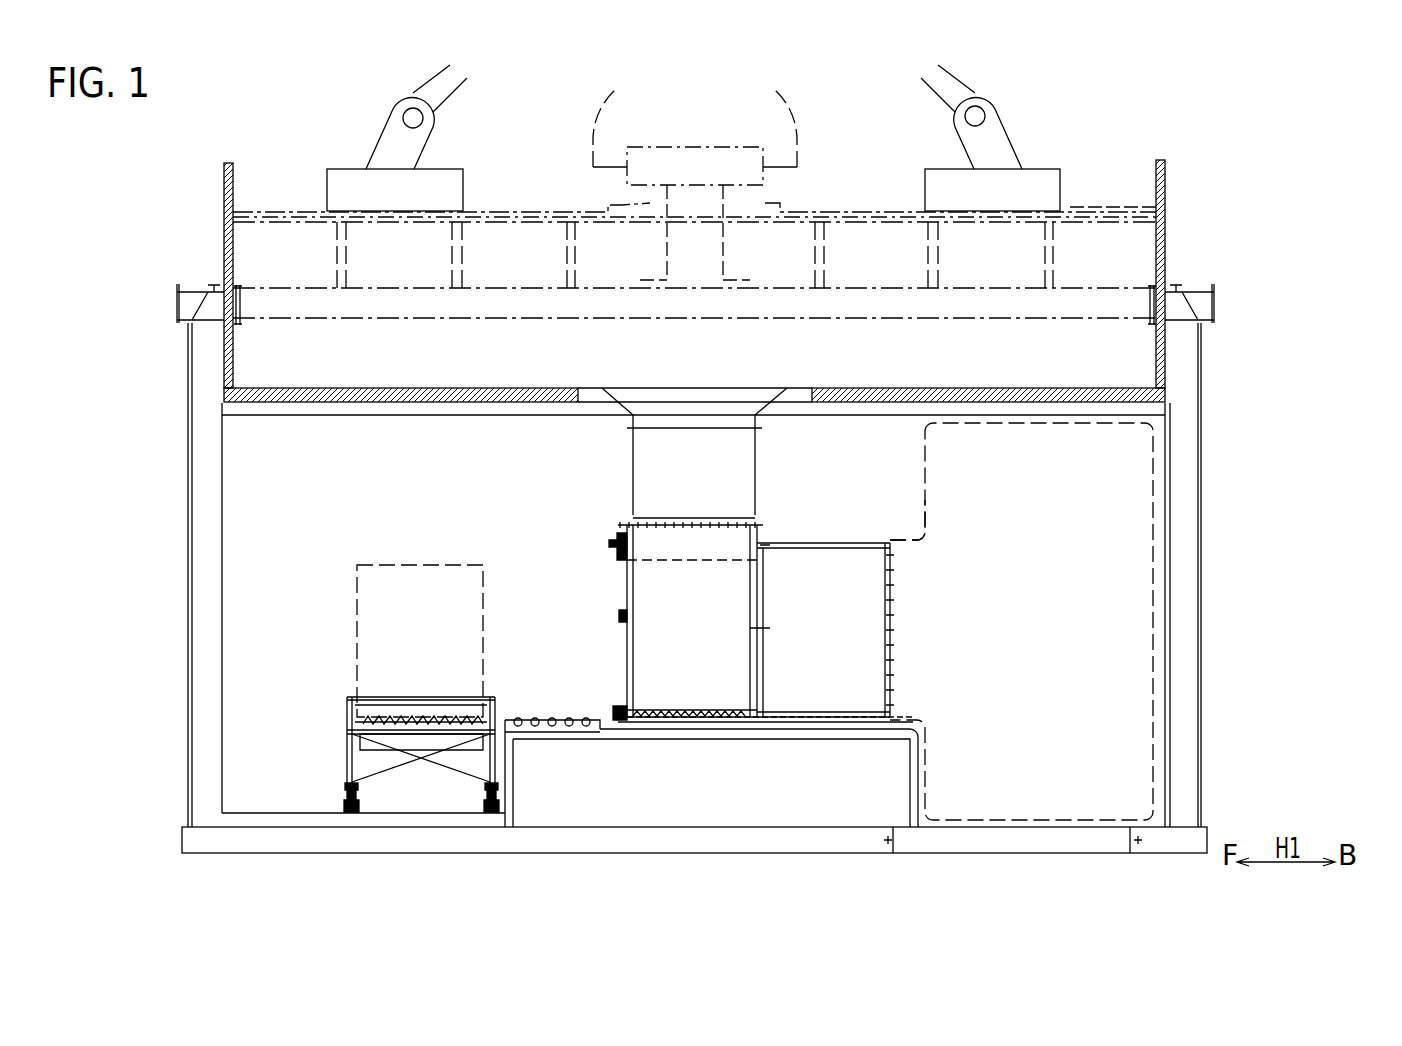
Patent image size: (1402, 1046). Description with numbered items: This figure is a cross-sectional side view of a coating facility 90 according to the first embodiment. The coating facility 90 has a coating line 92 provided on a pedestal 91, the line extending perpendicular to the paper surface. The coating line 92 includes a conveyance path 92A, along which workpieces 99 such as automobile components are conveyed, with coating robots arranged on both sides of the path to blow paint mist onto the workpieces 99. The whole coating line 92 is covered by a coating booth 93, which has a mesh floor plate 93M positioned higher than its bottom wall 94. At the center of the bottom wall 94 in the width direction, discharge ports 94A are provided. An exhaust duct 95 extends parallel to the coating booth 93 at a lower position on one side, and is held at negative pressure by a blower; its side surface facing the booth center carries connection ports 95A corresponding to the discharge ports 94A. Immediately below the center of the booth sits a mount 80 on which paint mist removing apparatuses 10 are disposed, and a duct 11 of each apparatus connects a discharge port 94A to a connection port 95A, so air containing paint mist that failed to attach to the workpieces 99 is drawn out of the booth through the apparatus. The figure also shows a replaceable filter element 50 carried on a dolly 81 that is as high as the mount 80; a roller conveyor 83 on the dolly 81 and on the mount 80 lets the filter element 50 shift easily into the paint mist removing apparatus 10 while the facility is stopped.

The paint mist removing apparatus 10 is at (598, 508).
The duct 11 is at (817, 543).
The filter element 50 is at (394, 560).
The mount 80 is at (686, 740).
The dolly 81 is at (333, 763).
The roller conveyor 83 is at (523, 717).
The coating facility 90 is at (1240, 255).
The pedestal 91 is at (1225, 445).
The coating line 92 is at (712, 162).
The conveyance path 92A is at (763, 180).
The coating booth 93 is at (1166, 185).
The floor plate 93M is at (1113, 207).
The bottom wall 94 is at (1025, 388).
The discharge port 94A is at (752, 388).
The exhaust duct 95 is at (1153, 522).
The connection port 95A is at (885, 540).
The workpiece 99 is at (797, 123).